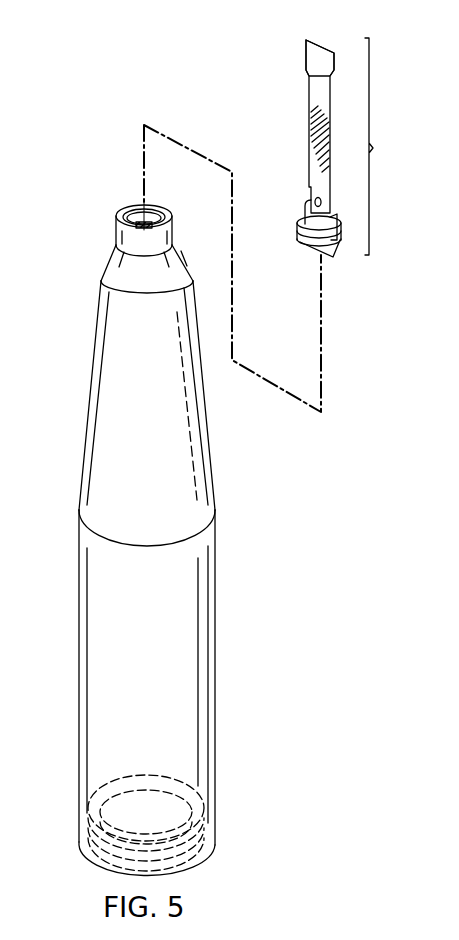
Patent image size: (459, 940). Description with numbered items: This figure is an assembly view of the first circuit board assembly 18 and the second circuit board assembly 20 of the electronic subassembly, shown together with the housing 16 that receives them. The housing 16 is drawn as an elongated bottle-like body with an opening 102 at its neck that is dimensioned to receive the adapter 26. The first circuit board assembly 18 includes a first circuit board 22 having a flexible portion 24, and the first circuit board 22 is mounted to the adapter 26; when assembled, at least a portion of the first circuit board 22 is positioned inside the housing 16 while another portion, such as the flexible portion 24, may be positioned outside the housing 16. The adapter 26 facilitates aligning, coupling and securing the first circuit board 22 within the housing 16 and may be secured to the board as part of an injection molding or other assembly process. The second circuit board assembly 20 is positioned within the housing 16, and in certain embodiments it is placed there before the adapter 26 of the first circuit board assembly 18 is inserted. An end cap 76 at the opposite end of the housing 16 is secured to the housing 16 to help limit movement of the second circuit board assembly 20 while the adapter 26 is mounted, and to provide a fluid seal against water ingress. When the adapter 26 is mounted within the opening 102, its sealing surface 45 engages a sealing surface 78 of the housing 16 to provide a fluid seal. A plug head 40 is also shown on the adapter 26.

The housing 16 is at (98, 388).
The first circuit board subassembly 18 is at (384, 146).
The second circuit board assembly 20 is at (110, 222).
The first circuit board 22 is at (297, 141).
The flexible portion 24 is at (318, 90).
The adapter 26 is at (337, 257).
The plug head 40 is at (300, 218).
The sealing surface 45 is at (306, 247).
The end cap 76 is at (86, 822).
The sealing surface 78 is at (153, 208).
The opening 102 is at (136, 207).